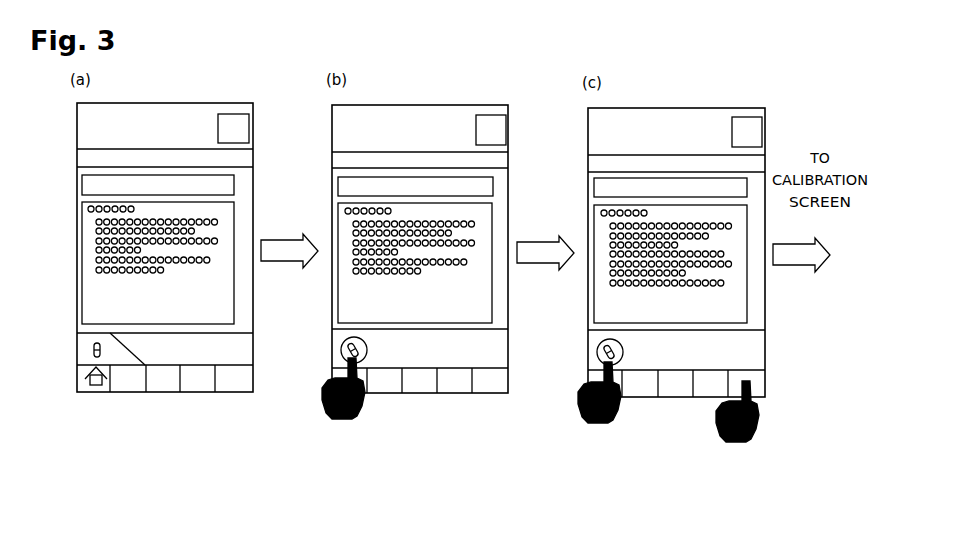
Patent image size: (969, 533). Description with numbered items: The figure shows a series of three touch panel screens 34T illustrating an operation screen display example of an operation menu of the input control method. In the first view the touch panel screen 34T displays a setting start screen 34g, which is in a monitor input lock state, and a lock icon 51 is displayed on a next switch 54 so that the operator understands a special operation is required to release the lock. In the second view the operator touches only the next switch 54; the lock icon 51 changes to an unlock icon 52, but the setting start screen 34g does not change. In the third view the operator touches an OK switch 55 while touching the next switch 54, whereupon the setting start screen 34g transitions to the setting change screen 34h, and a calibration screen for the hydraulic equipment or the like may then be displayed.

The touch panel screen 34T is at (189, 101).
The setting start screen 34g is at (223, 300).
The setting change screen 34h is at (737, 303).
The lock icon 51 is at (88, 352).
The unlock icon 52 is at (342, 362).
The next switch 54 is at (113, 355).
The OK switch 55 is at (231, 388).